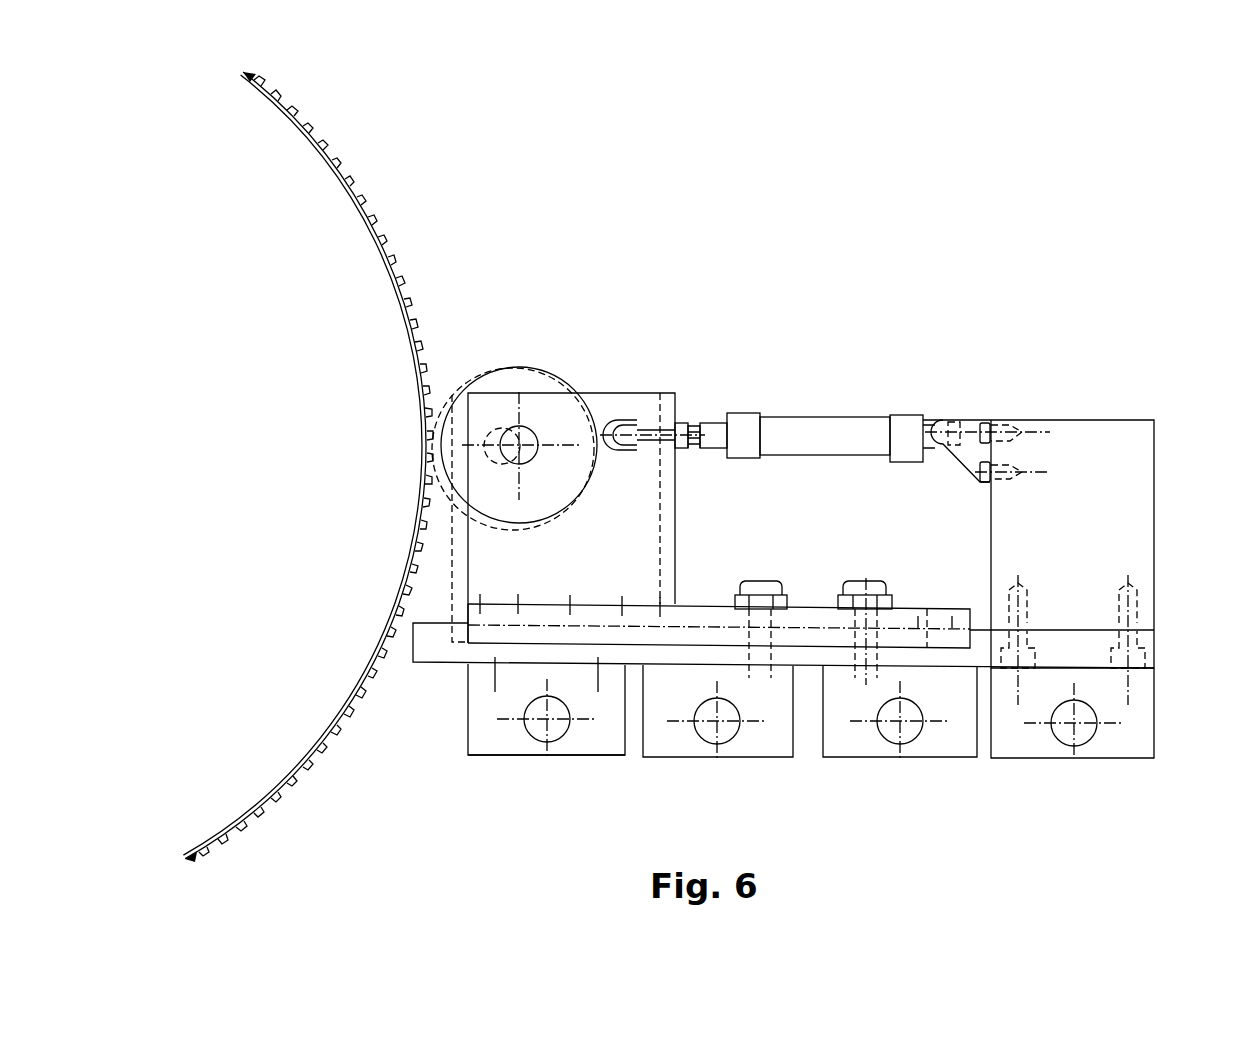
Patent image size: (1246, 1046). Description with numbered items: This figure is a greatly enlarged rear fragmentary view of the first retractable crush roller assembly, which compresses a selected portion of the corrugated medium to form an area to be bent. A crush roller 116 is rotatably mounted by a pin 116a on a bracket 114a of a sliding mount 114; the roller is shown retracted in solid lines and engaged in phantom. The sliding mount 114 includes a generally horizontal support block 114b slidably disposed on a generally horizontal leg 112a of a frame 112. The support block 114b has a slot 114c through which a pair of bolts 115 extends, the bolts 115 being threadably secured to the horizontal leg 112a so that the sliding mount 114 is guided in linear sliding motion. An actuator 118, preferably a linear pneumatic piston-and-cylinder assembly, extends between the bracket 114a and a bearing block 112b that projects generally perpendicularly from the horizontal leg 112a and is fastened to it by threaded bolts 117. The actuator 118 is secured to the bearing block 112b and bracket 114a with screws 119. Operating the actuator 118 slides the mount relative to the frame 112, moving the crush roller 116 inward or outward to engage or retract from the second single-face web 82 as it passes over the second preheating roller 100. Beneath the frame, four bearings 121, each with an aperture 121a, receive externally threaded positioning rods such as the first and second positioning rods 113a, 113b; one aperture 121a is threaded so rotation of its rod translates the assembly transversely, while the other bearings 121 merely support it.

The second single-face web 82 is at (378, 226).
The second preheating roller 100 is at (332, 481).
The frame 112 is at (1057, 414).
The horizontal leg 112a is at (715, 653).
The bearing block 112b is at (1110, 535).
The first positioning rod 113a is at (558, 732).
The second positioning rod 113b is at (1074, 737).
The sliding mount 114 is at (680, 535).
The bracket 114a is at (608, 572).
The support block 114b is at (460, 657).
The slot 114c is at (926, 645).
The bolts 115 is at (855, 580).
The crush roller 116 is at (518, 363).
The pin 116a is at (538, 442).
The threaded bolts 117 is at (1116, 627).
The actuator 118 is at (782, 413).
The screws 119 is at (636, 437).
The bearings 121 is at (480, 755).
The aperture 121a is at (524, 710).